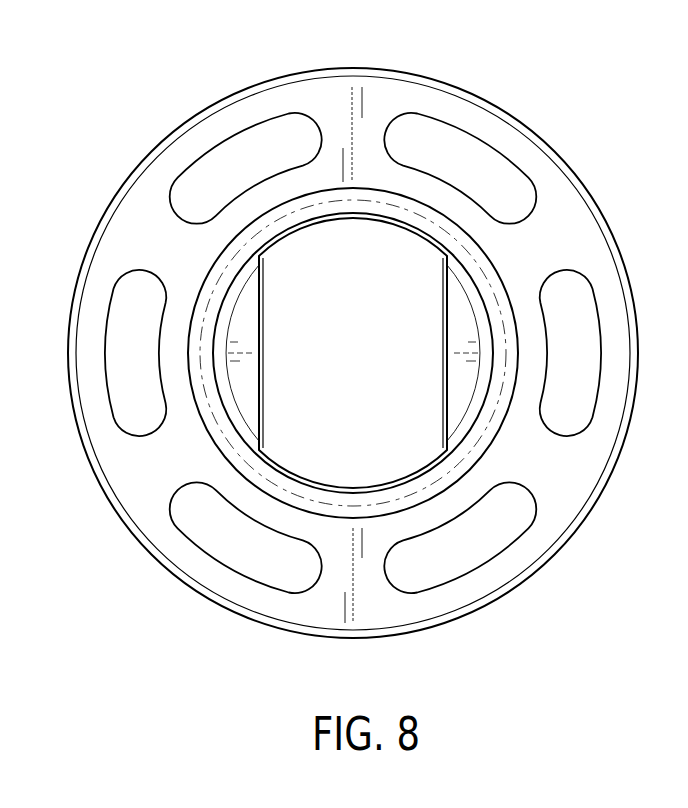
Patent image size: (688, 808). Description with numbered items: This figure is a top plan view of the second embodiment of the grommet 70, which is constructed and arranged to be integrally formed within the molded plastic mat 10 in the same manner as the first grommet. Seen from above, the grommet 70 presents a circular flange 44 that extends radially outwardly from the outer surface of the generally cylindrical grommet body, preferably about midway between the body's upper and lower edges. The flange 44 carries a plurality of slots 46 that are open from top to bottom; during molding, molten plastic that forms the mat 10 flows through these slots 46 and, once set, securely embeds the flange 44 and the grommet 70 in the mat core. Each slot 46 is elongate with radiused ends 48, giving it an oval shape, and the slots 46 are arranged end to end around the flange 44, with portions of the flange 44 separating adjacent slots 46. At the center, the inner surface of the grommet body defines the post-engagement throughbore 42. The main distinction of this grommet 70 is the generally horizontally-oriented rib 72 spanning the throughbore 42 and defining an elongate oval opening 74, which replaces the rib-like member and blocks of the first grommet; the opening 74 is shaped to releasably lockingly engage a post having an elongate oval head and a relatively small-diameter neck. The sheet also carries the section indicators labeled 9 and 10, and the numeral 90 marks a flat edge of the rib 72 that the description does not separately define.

The grommet 70 is at (195, 112).
The flange 44 is at (146, 504).
The slots 46 is at (249, 576).
The radiused ends 48 is at (530, 495).
The post-engagement throughbore 42 is at (366, 369).
The rib 72 is at (245, 390).
The elongate oval opening 74 is at (448, 292).
The flat face 90 is at (262, 333).
The mat 10 is at (352, 67).
The section line 9- 9 is at (68, 353).